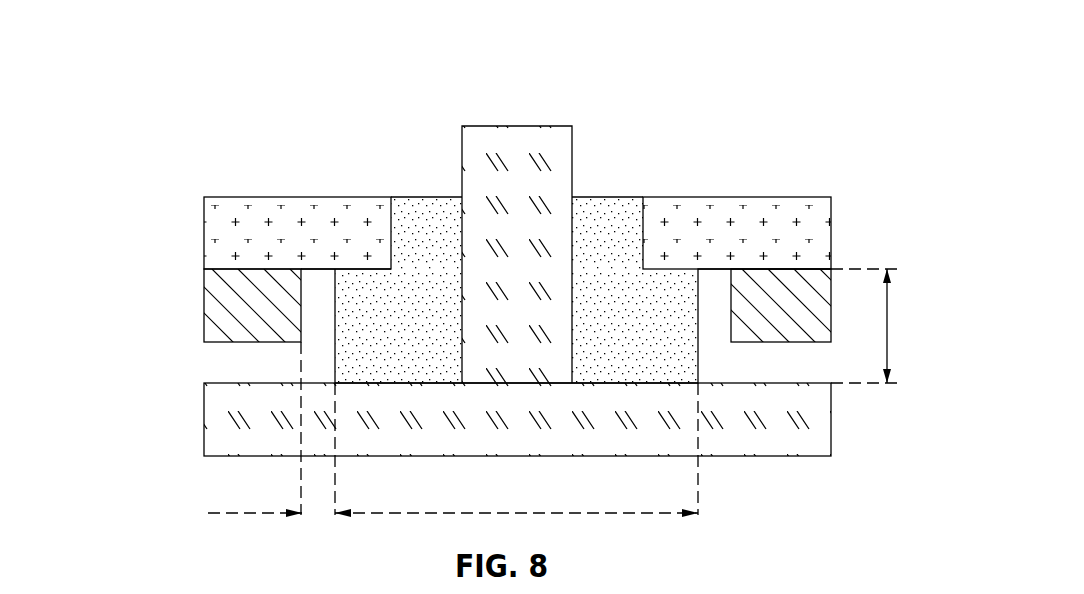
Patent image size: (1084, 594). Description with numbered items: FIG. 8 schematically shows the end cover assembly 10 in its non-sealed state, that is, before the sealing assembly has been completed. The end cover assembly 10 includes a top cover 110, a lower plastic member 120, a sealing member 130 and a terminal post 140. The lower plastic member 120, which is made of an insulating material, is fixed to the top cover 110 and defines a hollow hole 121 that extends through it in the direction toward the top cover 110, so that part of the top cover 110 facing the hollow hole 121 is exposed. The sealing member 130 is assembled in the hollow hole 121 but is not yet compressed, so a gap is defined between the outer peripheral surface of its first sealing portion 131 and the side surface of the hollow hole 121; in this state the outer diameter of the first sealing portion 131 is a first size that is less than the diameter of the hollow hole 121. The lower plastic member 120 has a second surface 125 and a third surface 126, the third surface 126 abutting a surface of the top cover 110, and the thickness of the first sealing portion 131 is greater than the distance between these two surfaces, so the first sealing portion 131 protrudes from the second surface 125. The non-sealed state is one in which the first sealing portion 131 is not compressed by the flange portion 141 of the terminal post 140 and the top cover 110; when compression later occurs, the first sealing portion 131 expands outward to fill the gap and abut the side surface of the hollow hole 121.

The end cover assembly 10 is at (530, 33).
The top cover 110 is at (801, 312).
The lower plastic member 120 is at (248, 236).
The hollow hole 121 is at (299, 303).
The second surface 125 is at (777, 342).
The third surface 126 is at (780, 269).
The sealing member 130 is at (373, 327).
The first sealing portion 131 is at (516, 291).
The terminal post 140 is at (263, 408).
The flange portion 141 is at (517, 254).